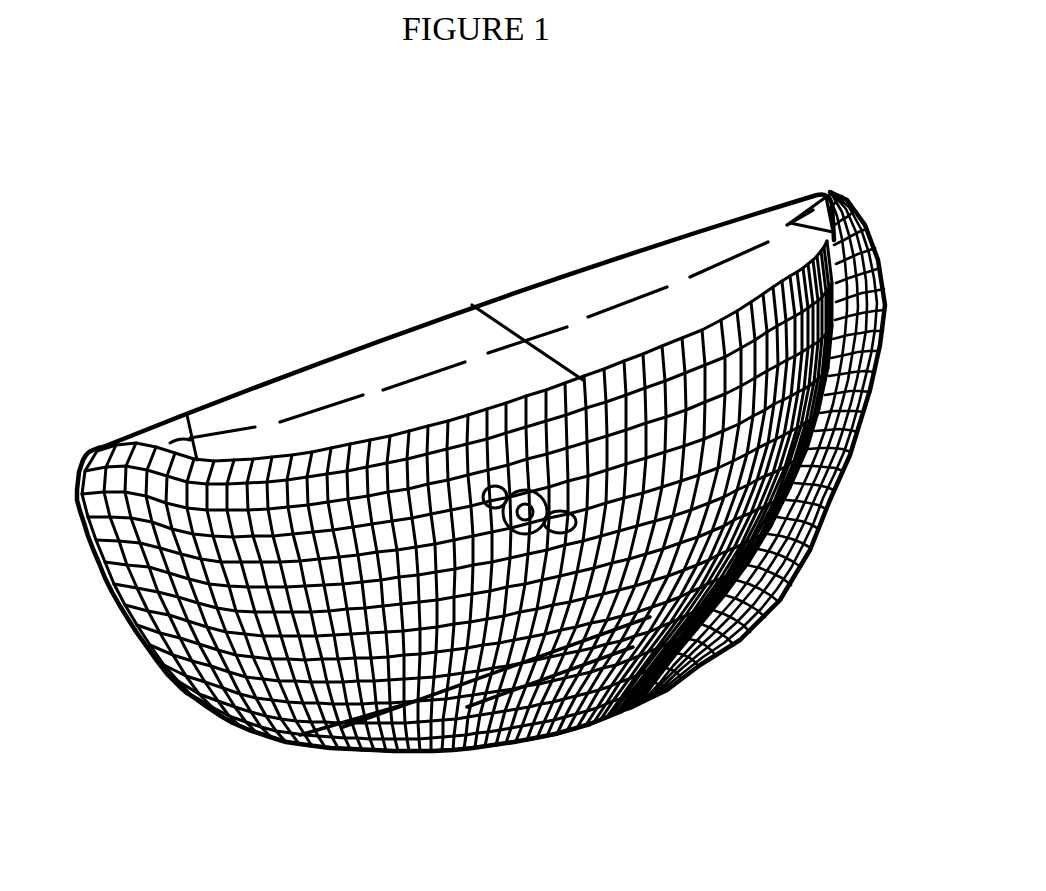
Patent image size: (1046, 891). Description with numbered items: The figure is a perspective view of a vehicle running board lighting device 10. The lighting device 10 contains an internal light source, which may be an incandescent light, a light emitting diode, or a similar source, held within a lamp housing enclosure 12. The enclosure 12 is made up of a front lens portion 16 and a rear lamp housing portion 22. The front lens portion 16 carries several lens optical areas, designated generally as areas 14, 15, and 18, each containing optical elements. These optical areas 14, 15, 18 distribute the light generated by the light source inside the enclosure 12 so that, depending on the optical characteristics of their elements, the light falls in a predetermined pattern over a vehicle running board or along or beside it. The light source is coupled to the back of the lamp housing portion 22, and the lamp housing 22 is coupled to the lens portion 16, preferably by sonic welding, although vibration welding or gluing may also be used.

The vehicle running board lighting device 10 is at (436, 249).
The lamp housing enclosure 12 is at (833, 190).
The lens optical area 14 is at (623, 727).
The lens optical area 15 is at (860, 388).
The front lens portion 16 is at (814, 555).
The lens optical area 18 is at (170, 677).
The rear lamp housing portion 22 is at (185, 417).